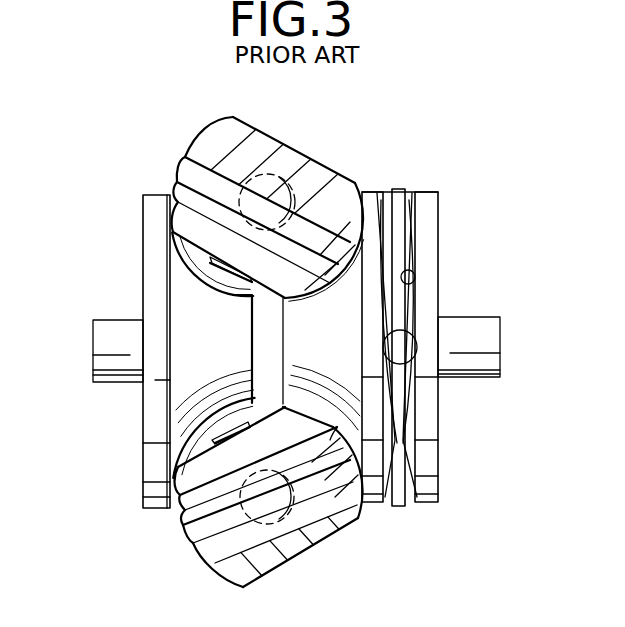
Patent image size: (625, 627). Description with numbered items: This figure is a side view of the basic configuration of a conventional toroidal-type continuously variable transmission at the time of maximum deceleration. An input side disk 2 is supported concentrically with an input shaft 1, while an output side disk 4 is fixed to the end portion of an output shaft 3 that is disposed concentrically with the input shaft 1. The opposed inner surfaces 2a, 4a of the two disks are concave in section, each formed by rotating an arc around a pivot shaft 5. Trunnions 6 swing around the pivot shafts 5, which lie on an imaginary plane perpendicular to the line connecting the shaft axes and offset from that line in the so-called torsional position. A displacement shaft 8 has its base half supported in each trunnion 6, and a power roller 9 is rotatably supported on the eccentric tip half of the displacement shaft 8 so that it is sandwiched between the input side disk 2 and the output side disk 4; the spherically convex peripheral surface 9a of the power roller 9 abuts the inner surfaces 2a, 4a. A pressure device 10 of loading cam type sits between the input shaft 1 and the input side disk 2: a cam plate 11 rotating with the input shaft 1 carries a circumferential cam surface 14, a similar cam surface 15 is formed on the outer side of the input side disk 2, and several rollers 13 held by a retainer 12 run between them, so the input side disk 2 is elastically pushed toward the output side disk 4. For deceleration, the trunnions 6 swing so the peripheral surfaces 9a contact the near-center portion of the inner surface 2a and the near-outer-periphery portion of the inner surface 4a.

The input shaft 1 is at (500, 345).
The input side disk 2 is at (373, 222).
The inner surface of the input side disk 2a is at (330, 440).
The output shaft 3 is at (97, 347).
The output side disk 4 is at (152, 252).
The inner surface of the output side disk 4a is at (233, 282).
The pivot shaft 5 is at (288, 160).
The trunnion 6 is at (210, 135).
The displacement shaft 8 is at (217, 263).
The power roller 9 is at (190, 206).
The peripheral surface of the power roller 9a is at (170, 218).
The pressure device 10 is at (447, 192).
The cam plate 11 is at (430, 237).
The retainer 12 is at (398, 191).
The roller 13 is at (395, 187).
The cam surface 14 is at (407, 265).
The cam surface 15 is at (388, 403).